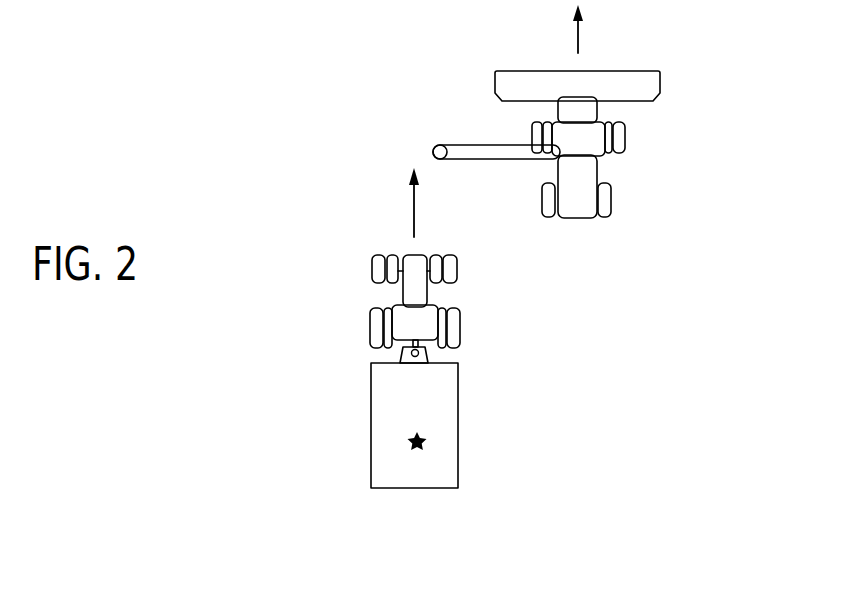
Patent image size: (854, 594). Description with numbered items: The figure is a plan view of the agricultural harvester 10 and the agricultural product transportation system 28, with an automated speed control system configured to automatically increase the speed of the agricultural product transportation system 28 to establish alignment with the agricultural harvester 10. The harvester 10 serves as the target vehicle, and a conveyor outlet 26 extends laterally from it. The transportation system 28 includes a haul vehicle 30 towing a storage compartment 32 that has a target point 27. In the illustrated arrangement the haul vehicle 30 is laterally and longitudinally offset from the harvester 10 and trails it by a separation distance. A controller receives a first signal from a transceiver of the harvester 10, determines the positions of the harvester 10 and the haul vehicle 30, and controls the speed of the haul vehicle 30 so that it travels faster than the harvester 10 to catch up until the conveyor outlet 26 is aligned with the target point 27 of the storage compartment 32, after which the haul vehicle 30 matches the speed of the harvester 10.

The agricultural harvester 10 is at (654, 155).
The conveyor outlet 26 is at (431, 152).
The target point 27 is at (410, 440).
The agricultural product transportation system 28 is at (452, 395).
The haul vehicle 30 is at (427, 300).
The storage compartment 32 is at (458, 468).